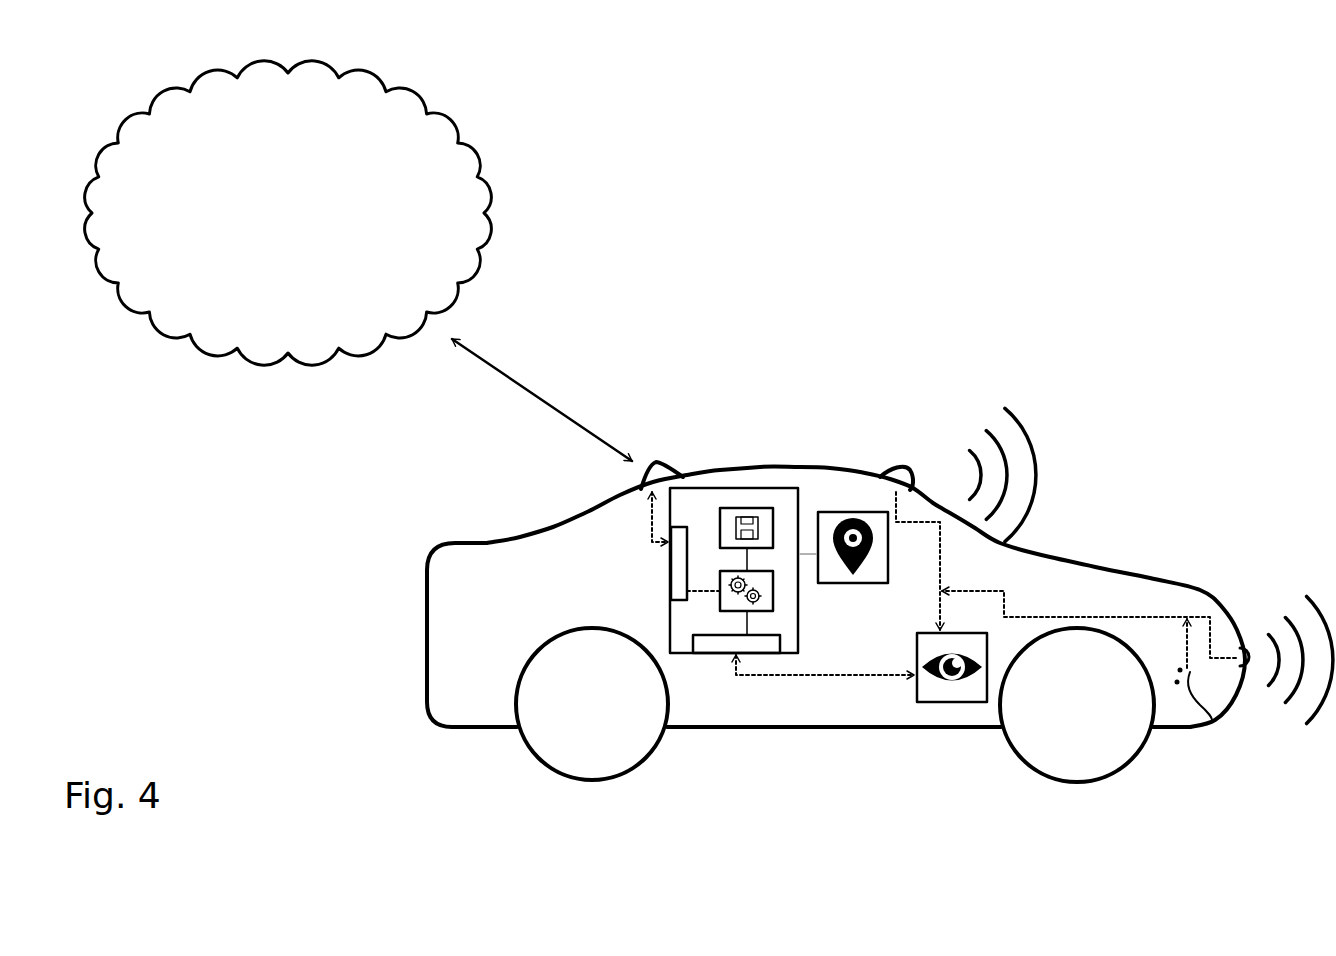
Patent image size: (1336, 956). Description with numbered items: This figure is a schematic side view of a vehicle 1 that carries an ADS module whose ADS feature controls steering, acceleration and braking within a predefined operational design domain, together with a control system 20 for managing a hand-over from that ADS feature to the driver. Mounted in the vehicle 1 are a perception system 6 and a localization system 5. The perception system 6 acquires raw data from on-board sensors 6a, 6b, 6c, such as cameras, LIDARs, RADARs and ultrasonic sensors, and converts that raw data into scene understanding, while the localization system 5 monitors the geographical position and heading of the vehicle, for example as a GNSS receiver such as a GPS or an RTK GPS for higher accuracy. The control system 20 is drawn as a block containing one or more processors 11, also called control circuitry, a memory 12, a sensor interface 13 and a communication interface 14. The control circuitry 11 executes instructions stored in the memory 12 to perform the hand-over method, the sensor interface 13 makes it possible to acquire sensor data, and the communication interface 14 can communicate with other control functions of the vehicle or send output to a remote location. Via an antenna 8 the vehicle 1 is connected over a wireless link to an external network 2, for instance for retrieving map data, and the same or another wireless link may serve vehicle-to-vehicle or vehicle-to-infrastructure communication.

The vehicle 1 is at (445, 723).
The external network 2 is at (437, 98).
The localization system 5 is at (835, 512).
The perception system 6 is at (965, 702).
The sensor 6a is at (1215, 722).
The sensor 6b is at (1242, 648).
The sensor 6c is at (898, 478).
The communication antenna 8 is at (656, 465).
The processor 11 is at (773, 598).
The memory 12 is at (748, 508).
The sensor interface 13 is at (720, 653).
The communication interface 14 is at (678, 587).
The control system 20 is at (722, 488).